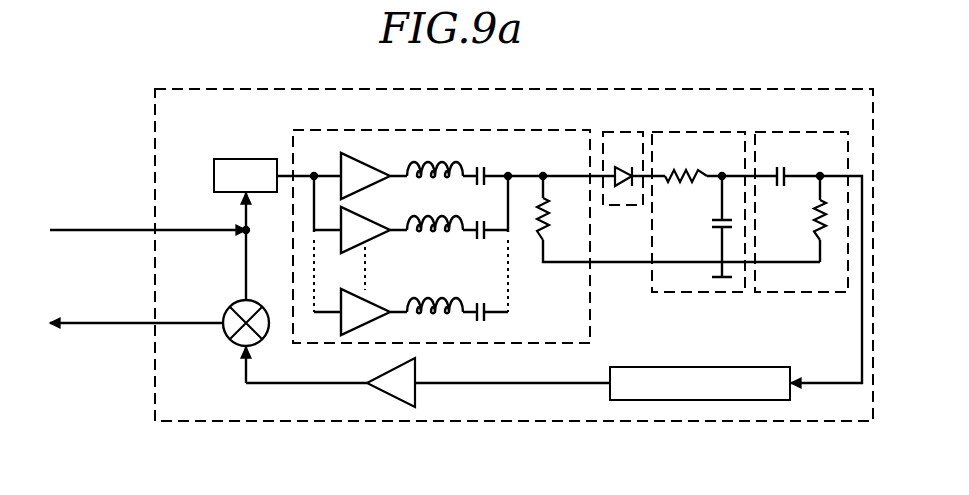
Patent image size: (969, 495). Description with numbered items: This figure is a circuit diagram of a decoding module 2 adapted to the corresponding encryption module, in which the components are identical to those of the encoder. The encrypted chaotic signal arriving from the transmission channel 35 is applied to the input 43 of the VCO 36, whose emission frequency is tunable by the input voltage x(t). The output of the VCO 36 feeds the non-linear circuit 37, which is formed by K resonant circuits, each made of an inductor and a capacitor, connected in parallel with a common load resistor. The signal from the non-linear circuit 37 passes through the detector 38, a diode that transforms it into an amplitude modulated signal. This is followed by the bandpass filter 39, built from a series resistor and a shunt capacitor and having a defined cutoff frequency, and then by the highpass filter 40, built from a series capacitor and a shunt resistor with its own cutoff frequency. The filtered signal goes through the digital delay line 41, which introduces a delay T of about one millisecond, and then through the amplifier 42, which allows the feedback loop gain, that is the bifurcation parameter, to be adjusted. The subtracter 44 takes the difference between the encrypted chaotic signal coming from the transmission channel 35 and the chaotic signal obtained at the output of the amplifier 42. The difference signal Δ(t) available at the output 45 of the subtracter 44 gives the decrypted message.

The tracking loop circuit 2 is at (180, 123).
The transmission channel 35 is at (92, 234).
The VCO 36 is at (245, 158).
The non-linear circuit 37 is at (437, 130).
The detector 38 is at (614, 132).
The bandpass filter 39 is at (704, 132).
The highpass filter 40 is at (811, 132).
The digital delay line 41 is at (694, 367).
The amplifier 42 is at (409, 373).
The input 43 is at (242, 228).
The subtracter 44 is at (233, 310).
The output 45 is at (92, 326).